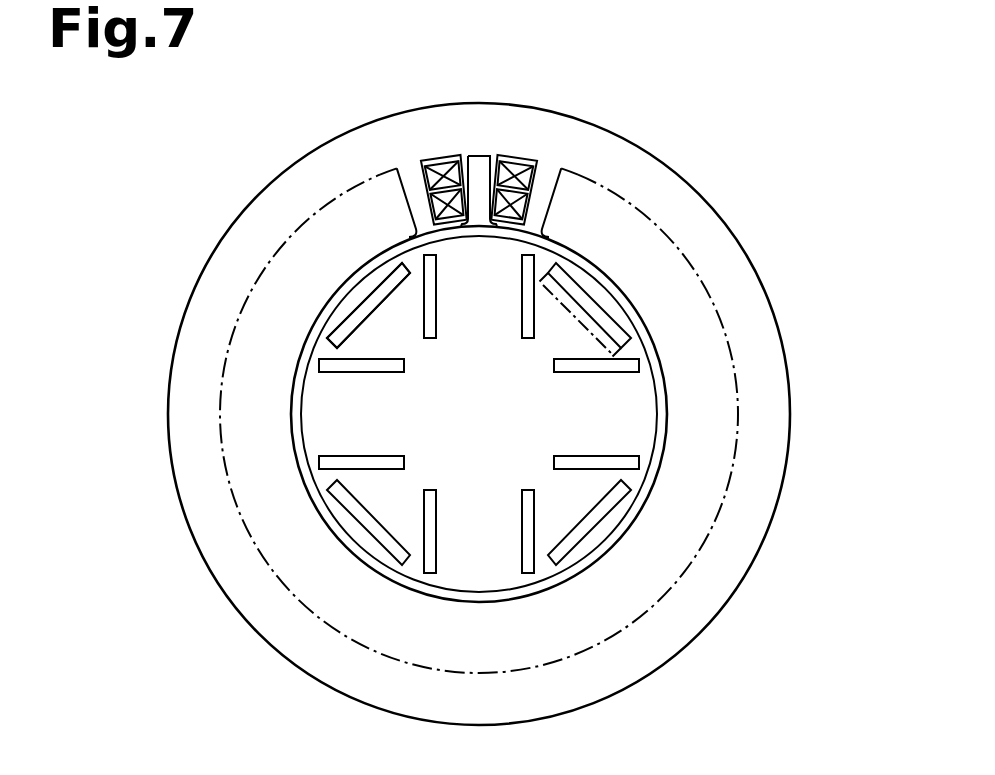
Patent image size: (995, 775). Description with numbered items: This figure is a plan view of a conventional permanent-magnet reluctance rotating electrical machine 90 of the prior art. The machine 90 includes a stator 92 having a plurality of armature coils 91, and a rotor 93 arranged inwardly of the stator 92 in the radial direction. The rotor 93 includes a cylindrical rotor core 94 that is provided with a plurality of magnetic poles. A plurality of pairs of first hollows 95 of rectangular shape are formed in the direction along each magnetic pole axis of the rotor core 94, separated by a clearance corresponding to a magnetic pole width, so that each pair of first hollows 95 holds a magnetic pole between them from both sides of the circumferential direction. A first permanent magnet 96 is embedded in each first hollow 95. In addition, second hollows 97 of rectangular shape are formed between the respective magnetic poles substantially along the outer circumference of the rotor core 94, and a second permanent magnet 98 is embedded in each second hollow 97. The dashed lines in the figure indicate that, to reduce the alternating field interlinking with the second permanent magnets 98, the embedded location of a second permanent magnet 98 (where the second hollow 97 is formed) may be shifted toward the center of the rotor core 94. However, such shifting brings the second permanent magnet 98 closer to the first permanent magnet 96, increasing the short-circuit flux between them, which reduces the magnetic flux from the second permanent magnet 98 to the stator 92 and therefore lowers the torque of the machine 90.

The permanent-magnet reluctance rotating electrical machine 90 is at (721, 169).
The armature coil 91 is at (499, 158).
The stator 92 is at (787, 360).
The rotor 93 is at (660, 426).
The rotor core 94 is at (640, 479).
The first hollow 95 is at (323, 366).
The first permanent magnet 96 is at (363, 370).
The second hollow 97 is at (347, 327).
The second permanent magnet 98 is at (372, 302).